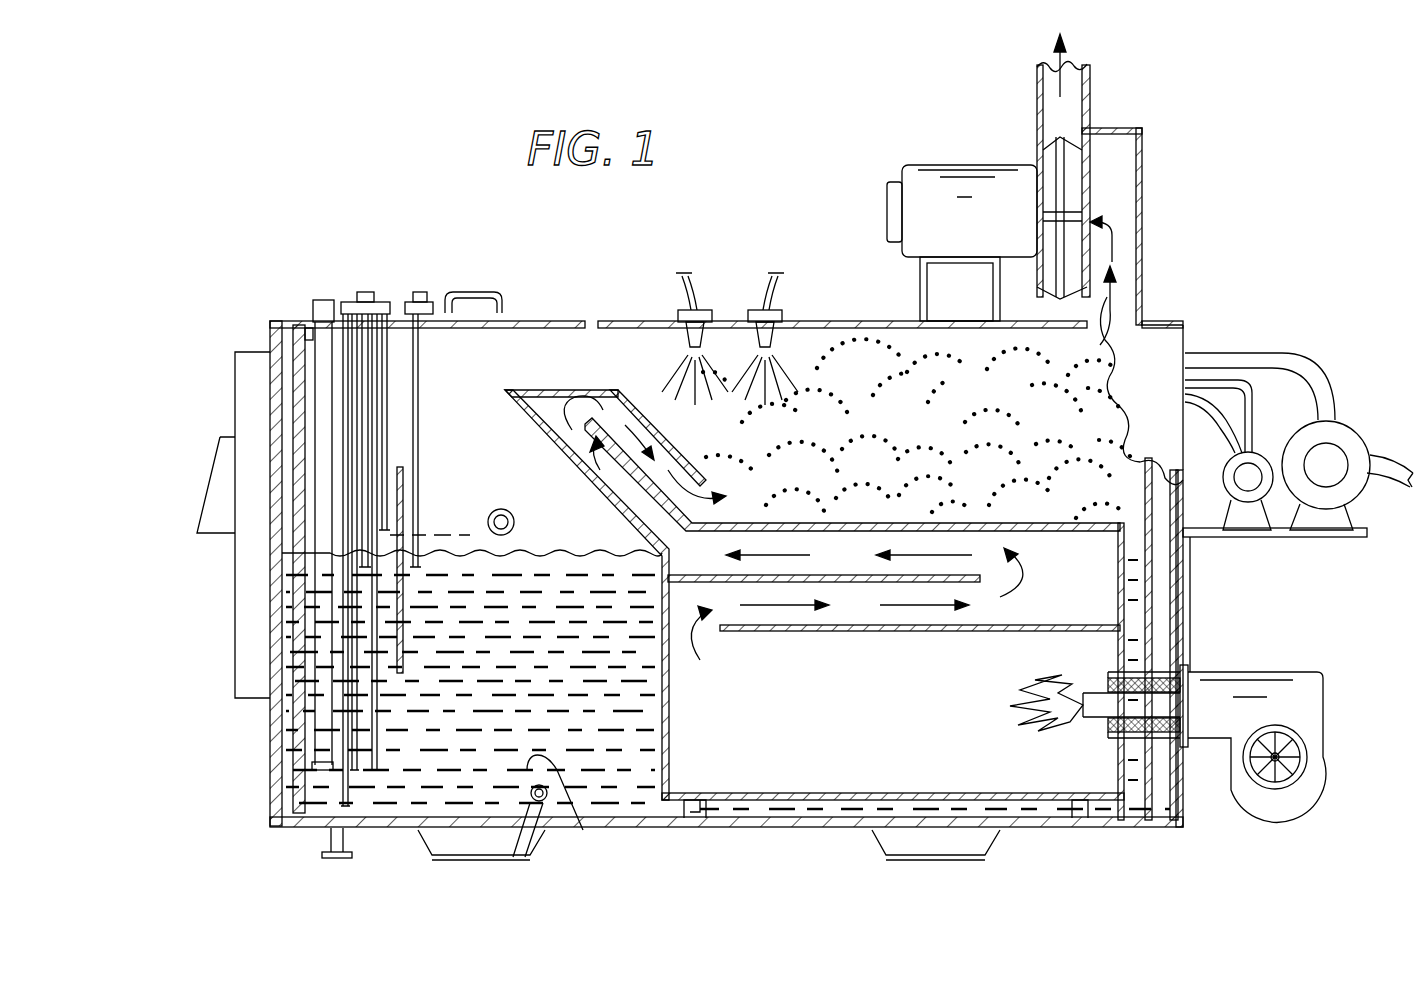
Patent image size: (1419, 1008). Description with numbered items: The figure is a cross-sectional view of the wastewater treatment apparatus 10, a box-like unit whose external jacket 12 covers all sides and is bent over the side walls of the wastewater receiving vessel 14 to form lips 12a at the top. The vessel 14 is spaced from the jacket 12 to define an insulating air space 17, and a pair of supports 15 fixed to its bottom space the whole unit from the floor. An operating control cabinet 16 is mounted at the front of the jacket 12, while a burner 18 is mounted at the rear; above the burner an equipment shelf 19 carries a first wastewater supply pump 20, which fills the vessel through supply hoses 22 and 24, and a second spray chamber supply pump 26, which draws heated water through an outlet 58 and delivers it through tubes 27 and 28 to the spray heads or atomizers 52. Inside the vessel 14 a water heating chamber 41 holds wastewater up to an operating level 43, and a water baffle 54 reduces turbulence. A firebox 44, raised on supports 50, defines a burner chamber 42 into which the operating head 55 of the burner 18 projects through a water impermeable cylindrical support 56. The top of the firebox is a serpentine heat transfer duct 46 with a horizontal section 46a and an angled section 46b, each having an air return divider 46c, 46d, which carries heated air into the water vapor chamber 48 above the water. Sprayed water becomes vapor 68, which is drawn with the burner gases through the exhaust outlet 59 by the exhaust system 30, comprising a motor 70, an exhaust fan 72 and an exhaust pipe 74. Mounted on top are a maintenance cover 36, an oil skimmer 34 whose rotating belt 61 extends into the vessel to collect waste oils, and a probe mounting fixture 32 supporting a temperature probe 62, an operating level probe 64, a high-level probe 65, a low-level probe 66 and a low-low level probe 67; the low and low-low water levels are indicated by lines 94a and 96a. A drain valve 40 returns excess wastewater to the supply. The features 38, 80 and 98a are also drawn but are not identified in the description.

The wastewater treatment apparatus 10 is at (248, 292).
The external jacket 12 is at (1172, 348).
The lips 12a is at (312, 320).
The wastewater receiving vessel 14 is at (280, 808).
The supports 15 is at (540, 848).
The operating control cabinet 16 is at (242, 400).
The insulating air space 17 is at (278, 652).
The burner 18 is at (1330, 708).
The equipment shelf 19 is at (1340, 537).
The first wastewater supply pump 20 is at (1352, 438).
The supply hose 22 is at (1375, 485).
The supply hose 24 is at (1305, 363).
The second spray chamber supply pump 26 is at (1244, 503).
The supply tube 27 is at (1258, 396).
The supply tube 28 is at (775, 292).
The water vapor and burner gas exhaust system 30 is at (938, 142).
The probe mounting fixture 32 is at (398, 308).
The oil skimmer 34 is at (318, 318).
The maintenance cover 36 is at (890, 318).
The drain fitting 38 is at (330, 846).
The drain valve 40 is at (516, 524).
The water heating chamber 41 is at (586, 836).
The burner chamber 42 is at (866, 720).
The operating level 43 is at (528, 553).
The firebox 44 is at (878, 792).
The serpentine heat transfer duct 46 is at (866, 562).
The horizontal section 46a is at (1108, 530).
The angled section 46b is at (554, 392).
The air return divider 46c is at (858, 635).
The air return divider 46d is at (574, 456).
The water vapor chamber 48 is at (828, 345).
The supports 50 is at (698, 825).
The spray heads or atomizers 52 is at (768, 338).
The water baffle 54 is at (404, 482).
The operating head 55 is at (1106, 718).
The water impermeable cylindrical support 56 is at (1168, 660).
The outlet 58 is at (530, 860).
The exhaust outlet 59 is at (1118, 306).
The rotating belt 61 is at (316, 715).
The temperature probe 62 is at (420, 445).
The operating level probe 64 is at (380, 362).
The high-level probe 65 is at (388, 400).
The low-level probe 66 is at (380, 740).
The low-low level probe 67 is at (310, 776).
The vapor 68 is at (980, 402).
The motor 70 is at (958, 172).
The exhaust fan 72 is at (1040, 140).
The exhaust pipe 74 is at (1080, 104).
The control panel bracket 80 is at (222, 456).
The low water level line 94a is at (396, 778).
The low-low water level line 96a is at (396, 805).
The water level line 98a is at (452, 535).